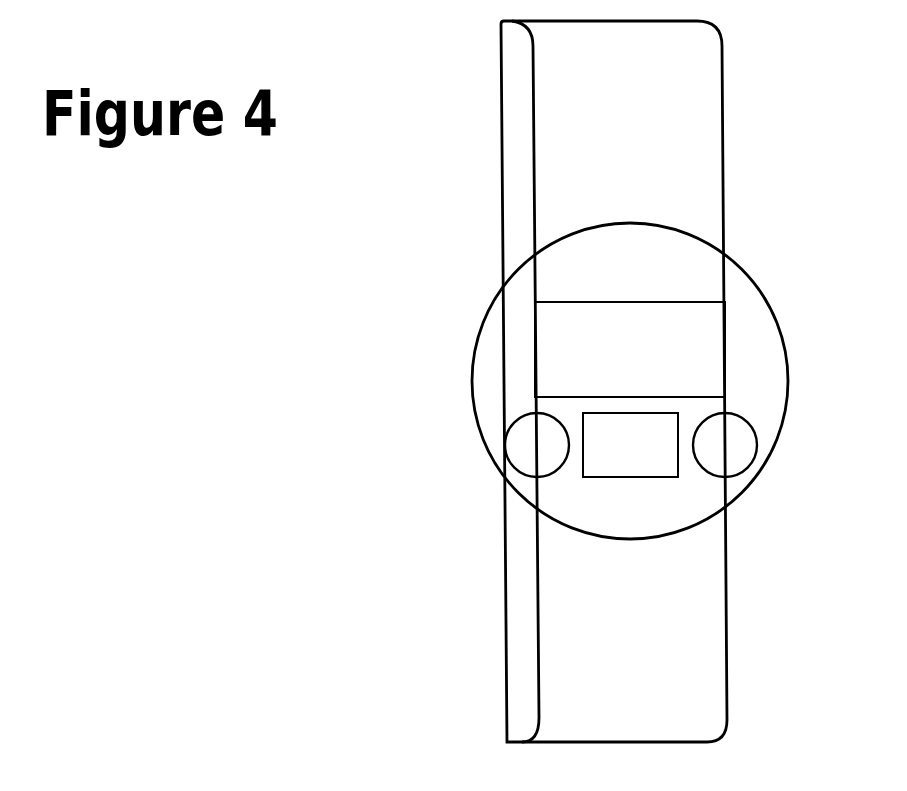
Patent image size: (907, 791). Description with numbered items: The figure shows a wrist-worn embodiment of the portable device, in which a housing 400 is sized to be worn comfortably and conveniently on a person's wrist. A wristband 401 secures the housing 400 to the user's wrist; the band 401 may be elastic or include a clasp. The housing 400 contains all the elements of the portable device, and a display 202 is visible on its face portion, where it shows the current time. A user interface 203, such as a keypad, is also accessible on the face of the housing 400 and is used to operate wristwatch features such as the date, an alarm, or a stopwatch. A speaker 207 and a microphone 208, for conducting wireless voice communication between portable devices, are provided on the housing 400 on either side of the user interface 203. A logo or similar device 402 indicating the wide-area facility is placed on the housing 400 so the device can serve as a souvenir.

The housing 400 is at (497, 350).
The wristband 401 is at (692, 162).
The logo 402 is at (678, 270).
The display 202 is at (630, 349).
The user interface 203 is at (630, 445).
The speaker 207 is at (725, 445).
The microphone 208 is at (537, 445).